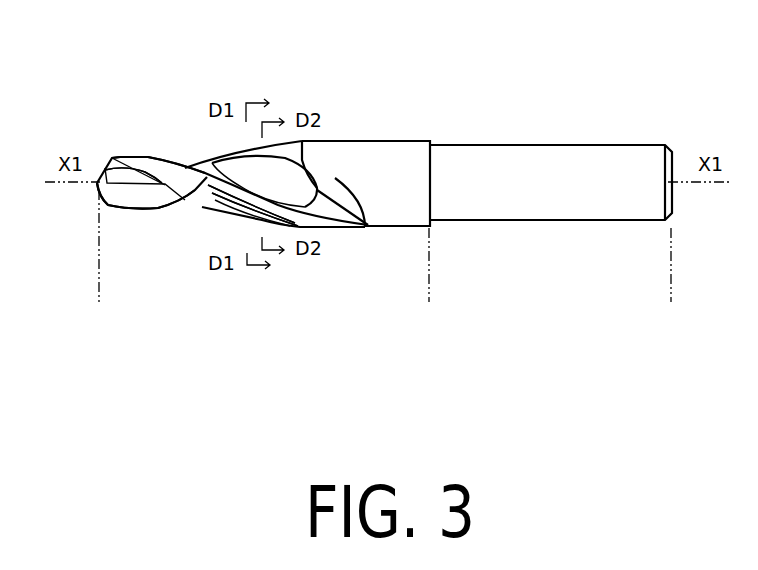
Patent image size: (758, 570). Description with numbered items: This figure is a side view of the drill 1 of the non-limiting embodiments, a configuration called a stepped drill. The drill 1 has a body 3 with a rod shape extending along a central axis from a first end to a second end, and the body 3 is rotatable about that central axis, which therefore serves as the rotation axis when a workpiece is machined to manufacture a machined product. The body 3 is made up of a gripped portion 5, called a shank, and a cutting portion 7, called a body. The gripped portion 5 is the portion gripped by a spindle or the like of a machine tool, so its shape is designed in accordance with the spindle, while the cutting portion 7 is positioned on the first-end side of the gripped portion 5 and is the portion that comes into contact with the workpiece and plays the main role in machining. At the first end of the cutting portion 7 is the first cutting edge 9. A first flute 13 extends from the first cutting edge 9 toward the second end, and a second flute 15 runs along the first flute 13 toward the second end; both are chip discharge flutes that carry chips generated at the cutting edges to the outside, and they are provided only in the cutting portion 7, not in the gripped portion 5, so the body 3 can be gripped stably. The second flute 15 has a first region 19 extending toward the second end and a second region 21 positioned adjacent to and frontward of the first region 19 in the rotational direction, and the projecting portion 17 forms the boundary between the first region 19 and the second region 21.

The drill 1 is at (533, 95).
The body 3 is at (578, 325).
The gripped portion 5 is at (429, 283).
The cutting portion 7 is at (418, 287).
The first cutting edge 9 is at (100, 198).
The first flute 13 is at (256, 174).
The second flute 15 is at (236, 164).
The projecting portion 17 is at (238, 209).
The first region 19 is at (302, 212).
The second region 21 is at (205, 171).